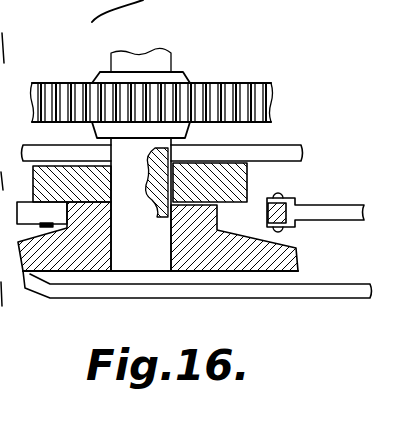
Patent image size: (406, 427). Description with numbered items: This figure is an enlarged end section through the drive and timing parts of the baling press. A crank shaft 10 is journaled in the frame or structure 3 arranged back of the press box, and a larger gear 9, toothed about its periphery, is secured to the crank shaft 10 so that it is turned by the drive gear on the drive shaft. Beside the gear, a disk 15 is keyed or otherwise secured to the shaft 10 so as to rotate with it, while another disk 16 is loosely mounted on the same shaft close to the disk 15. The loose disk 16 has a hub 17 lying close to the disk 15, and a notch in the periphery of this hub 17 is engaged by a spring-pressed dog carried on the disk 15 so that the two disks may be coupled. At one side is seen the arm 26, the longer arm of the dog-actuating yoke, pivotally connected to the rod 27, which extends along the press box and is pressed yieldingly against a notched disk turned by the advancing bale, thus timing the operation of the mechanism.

The frame or structure 3 is at (36, 147).
The larger gear 9 is at (213, 93).
The crank shaft 10 is at (168, 63).
The disk 15 is at (233, 185).
The disk 16 is at (262, 253).
The hub 17 is at (215, 222).
The arm 26 is at (292, 198).
The rod 27 is at (352, 205).